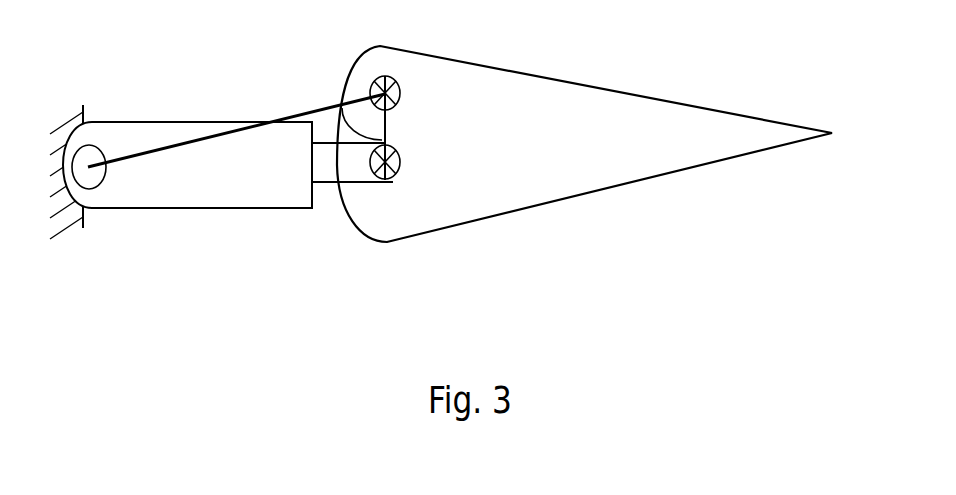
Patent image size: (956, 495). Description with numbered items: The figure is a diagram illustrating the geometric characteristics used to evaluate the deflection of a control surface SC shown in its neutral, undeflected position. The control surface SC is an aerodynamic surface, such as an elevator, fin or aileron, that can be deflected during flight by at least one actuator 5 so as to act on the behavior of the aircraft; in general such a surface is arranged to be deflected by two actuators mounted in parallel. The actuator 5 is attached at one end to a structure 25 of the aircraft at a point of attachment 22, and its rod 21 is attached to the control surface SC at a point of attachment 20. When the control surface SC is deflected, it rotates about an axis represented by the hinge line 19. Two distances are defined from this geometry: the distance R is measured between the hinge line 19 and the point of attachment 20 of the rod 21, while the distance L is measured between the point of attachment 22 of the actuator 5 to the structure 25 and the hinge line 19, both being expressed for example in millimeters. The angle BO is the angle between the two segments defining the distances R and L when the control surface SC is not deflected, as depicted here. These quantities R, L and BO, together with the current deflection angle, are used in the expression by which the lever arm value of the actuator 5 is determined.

The actuator 5 is at (211, 210).
The hinge line 19 is at (398, 90).
The point of attachment 20 is at (400, 162).
The rod 21 is at (356, 186).
The point of attachment 22 is at (90, 167).
The structure 25 is at (86, 210).
The angle BO is at (343, 108).
The distance L is at (230, 125).
The distance R is at (387, 124).
The control surface SC is at (547, 205).